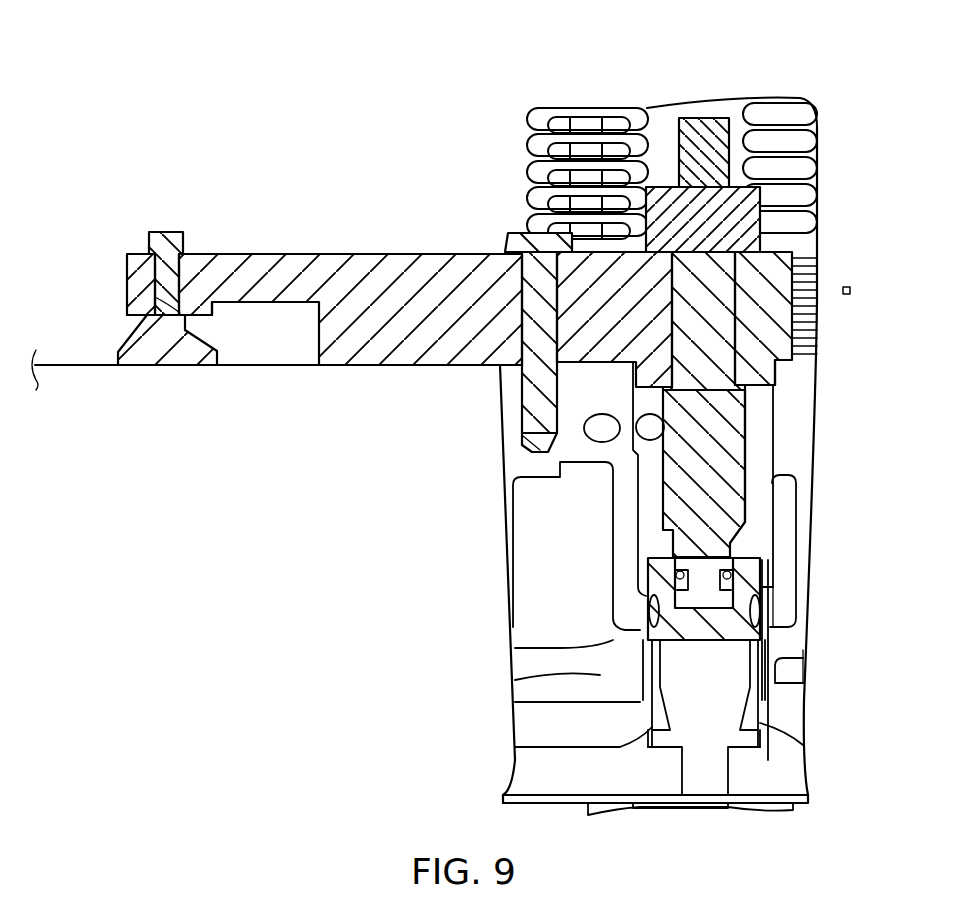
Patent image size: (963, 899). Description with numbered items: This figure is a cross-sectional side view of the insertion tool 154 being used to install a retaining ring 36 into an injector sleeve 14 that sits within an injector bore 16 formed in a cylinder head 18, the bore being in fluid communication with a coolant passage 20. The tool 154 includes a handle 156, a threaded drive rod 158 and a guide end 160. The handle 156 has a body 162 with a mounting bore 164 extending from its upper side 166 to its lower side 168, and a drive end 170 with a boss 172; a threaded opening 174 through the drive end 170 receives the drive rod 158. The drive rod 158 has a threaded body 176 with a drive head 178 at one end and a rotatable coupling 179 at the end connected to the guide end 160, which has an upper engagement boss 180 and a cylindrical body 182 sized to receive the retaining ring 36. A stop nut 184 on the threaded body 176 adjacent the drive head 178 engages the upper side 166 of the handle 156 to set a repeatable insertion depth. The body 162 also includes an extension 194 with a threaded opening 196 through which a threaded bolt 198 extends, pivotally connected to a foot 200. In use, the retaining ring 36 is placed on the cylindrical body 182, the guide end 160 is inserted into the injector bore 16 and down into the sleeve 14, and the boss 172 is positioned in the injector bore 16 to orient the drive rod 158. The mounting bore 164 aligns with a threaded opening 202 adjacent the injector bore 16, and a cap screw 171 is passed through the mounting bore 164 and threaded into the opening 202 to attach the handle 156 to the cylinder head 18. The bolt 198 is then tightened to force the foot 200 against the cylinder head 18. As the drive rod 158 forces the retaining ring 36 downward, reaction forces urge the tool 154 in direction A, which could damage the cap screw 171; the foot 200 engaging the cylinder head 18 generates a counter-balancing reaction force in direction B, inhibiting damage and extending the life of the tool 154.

The injector sleeve 14 is at (640, 705).
The injector bore 16 is at (640, 485).
The cylinder head 18 is at (83, 390).
The coolant passage 20 is at (613, 647).
The retaining ring 36 is at (643, 612).
The insertion tool 154 is at (170, 515).
The handle 156 is at (357, 222).
The threaded drive rod 158 is at (748, 465).
The guide end 160 is at (777, 593).
The body 162 is at (367, 368).
The mounting bore 164 is at (527, 353).
The upper side 166 is at (400, 252).
The lower side 168 is at (428, 366).
The drive end 170 is at (780, 327).
The cap screw 171 is at (513, 233).
The boss 172 is at (773, 382).
The threaded opening 174 is at (674, 342).
The threaded body 176 is at (746, 443).
The drive head 178 is at (722, 133).
The rotatable coupling 179 is at (765, 555).
The upper engagement boss 180 is at (775, 587).
The cylindrical body 182 is at (797, 643).
The stop nut 184 is at (753, 212).
The extension 194 is at (233, 258).
The threaded opening 196 is at (187, 318).
The threaded bolt 198 is at (162, 232).
The foot 200 is at (177, 364).
The threaded opening 202 is at (545, 453).